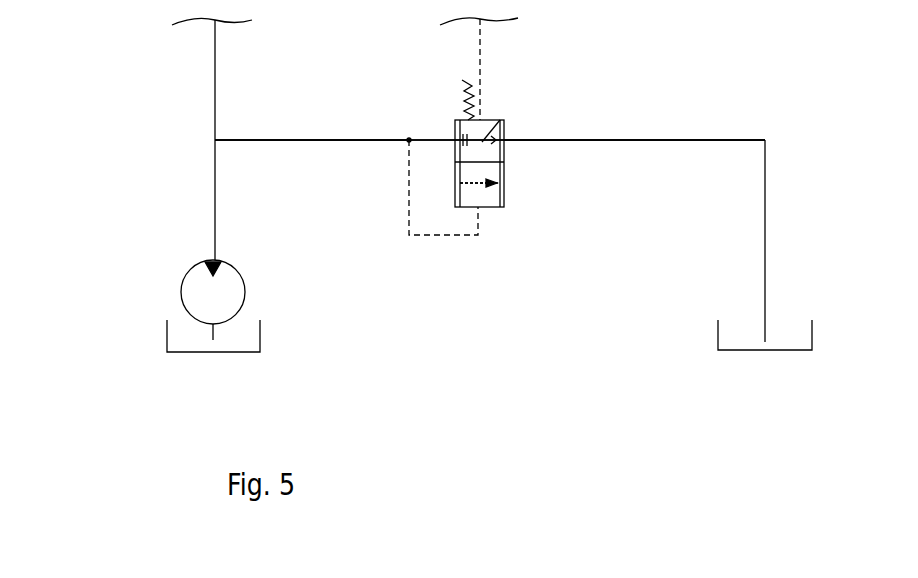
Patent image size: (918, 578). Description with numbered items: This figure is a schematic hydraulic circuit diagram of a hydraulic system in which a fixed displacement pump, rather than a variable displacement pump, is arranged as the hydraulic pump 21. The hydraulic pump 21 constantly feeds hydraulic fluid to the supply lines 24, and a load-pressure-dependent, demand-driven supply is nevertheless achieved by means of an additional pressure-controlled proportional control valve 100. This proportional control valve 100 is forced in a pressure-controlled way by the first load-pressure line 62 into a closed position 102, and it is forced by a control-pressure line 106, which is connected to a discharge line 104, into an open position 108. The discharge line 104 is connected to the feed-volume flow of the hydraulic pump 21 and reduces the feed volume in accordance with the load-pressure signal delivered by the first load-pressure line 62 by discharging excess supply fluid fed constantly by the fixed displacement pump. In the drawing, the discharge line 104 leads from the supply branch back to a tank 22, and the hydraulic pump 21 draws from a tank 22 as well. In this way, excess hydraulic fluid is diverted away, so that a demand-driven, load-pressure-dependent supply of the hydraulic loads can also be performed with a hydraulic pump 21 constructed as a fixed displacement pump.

The hydraulic pump 21 is at (238, 292).
The tank 22 is at (237, 342).
The supply line 24 is at (213, 103).
The first load-pressure line 62 is at (481, 36).
The pressure-controlled proportional control valve 100 is at (458, 140).
The closed position 102 is at (481, 142).
The discharge line 104 is at (313, 140).
The control-pressure line 106 is at (443, 240).
The open position 108 is at (458, 172).